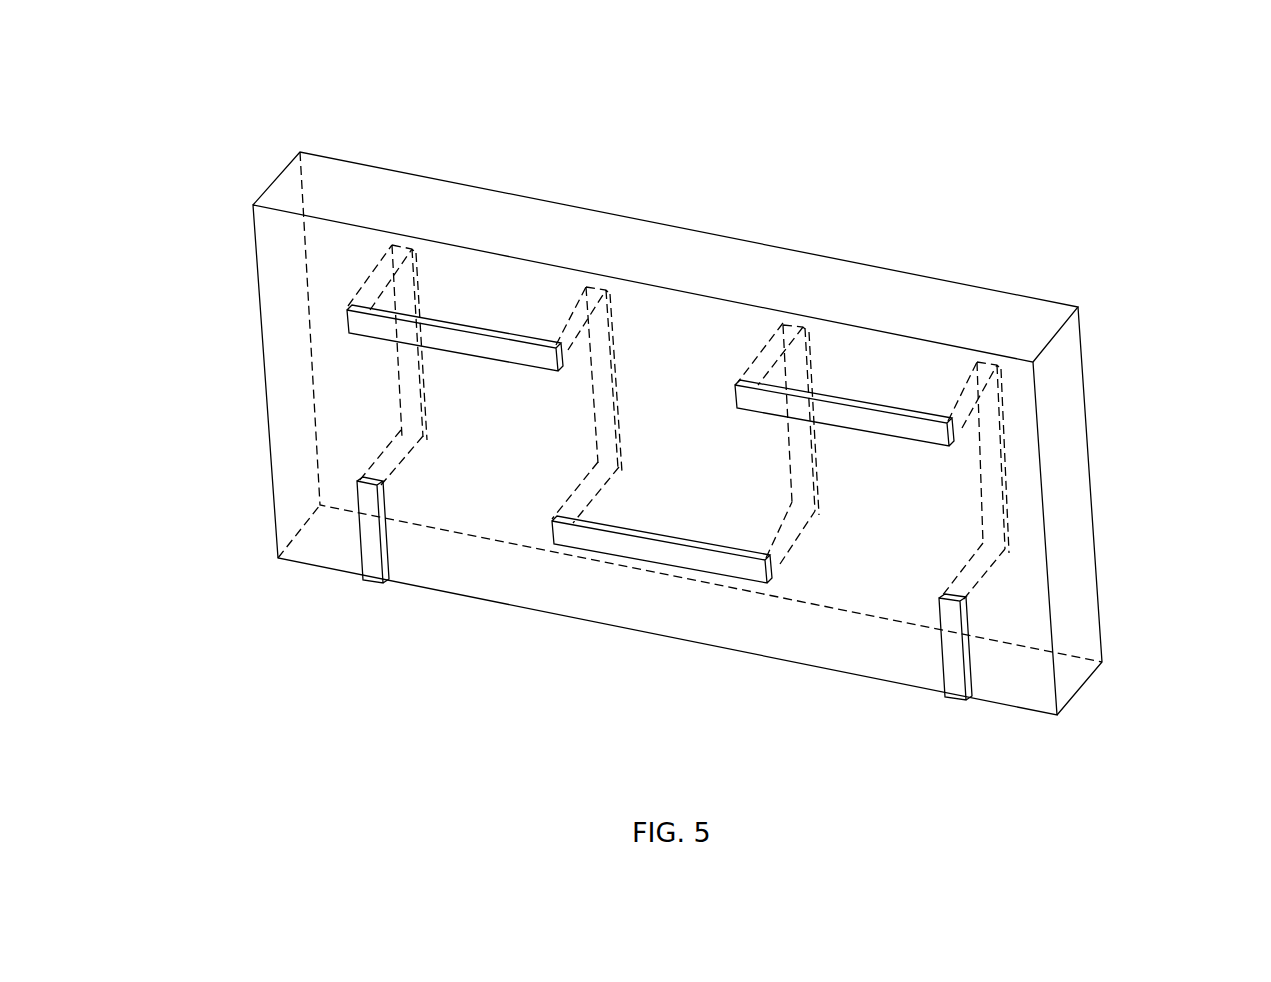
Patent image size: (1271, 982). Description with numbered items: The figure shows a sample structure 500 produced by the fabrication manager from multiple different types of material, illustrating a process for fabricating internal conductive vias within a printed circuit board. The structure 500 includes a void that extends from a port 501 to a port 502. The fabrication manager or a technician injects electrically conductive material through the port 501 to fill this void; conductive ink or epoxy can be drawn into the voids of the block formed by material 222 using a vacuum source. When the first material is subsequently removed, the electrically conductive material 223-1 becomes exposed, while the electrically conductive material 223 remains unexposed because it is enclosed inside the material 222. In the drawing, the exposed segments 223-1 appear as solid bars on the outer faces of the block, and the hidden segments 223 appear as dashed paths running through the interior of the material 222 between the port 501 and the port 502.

The structure 500 is at (232, 77).
The material 222 is at (1020, 305).
The electrically conductive material 223 is at (612, 348).
The electrically conductive material 223-1 is at (567, 502).
The port 501 is at (372, 583).
The port 502 is at (948, 667).